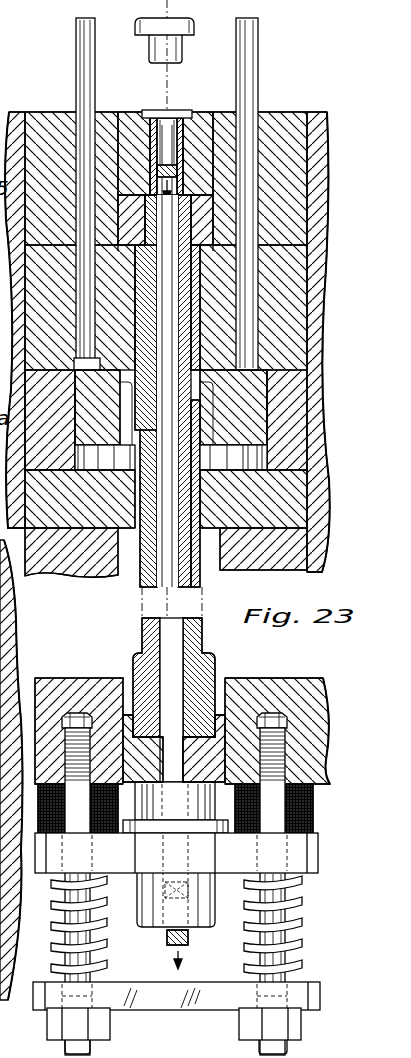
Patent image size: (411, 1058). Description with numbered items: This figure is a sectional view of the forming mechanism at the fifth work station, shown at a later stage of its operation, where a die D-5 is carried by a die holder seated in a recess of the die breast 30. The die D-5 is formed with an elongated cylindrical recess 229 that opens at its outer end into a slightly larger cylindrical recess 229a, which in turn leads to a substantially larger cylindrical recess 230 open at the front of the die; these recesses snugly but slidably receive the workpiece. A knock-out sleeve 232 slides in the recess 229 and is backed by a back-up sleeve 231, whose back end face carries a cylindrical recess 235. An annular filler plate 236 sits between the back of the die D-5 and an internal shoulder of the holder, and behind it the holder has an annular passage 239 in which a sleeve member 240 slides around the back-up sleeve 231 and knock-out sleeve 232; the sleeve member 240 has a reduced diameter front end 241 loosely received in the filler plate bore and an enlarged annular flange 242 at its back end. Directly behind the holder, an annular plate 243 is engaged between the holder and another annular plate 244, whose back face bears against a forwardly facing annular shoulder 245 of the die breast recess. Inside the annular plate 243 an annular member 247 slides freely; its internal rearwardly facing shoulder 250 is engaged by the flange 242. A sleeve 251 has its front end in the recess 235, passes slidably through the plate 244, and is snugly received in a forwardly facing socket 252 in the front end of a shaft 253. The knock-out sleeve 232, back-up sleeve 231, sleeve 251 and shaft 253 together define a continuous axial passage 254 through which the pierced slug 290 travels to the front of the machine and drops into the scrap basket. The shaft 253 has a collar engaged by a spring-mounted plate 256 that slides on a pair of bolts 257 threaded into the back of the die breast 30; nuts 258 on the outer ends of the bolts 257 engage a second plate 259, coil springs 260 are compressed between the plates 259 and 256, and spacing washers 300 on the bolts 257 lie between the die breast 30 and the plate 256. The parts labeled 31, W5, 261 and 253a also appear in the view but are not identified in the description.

The die breast 30 is at (316, 298).
The base plate 31 is at (0, 90).
The cap screw W5 is at (143, 49).
The die D-5 is at (128, 128).
The pierced slug 290 is at (167, 160).
The cylindrical recess 230 is at (192, 112).
The cylindrical recess 229a is at (187, 137).
The elongated cylindrical recess 229 is at (185, 155).
The knock-out sleeve 232 is at (178, 173).
The annular filler plate 236 is at (213, 212).
The reduced diameter front end 241 is at (213, 233).
The guide rod 261 is at (80, 289).
The annular passage 239 is at (197, 273).
The back-up sleeve 231 is at (186, 316).
The sleeve member 240 is at (140, 335).
The rearwardly facing annular internal shoulder 250 is at (100, 357).
The enlarged annular flange 242 is at (207, 397).
The annular plate 243 is at (297, 428).
The annular member 247 is at (88, 428).
The cylindrical recess 235 is at (212, 458).
The annular plate 244 is at (297, 504).
The continuous axial passage 254 is at (142, 577).
The forwardly facing annular shoulder 245 is at (284, 532).
The sleeve 251 is at (155, 623).
The forwardly facing socket 252 is at (207, 666).
The bushing lip 253a is at (163, 756).
The shaft 253 is at (200, 757).
The bolts 257 is at (288, 762).
The spacing washers 300 is at (313, 795).
The spring-mounted plate 256 is at (318, 852).
The coil springs 260 is at (303, 908).
The second plate 259 is at (310, 996).
The nuts 258 is at (300, 1030).